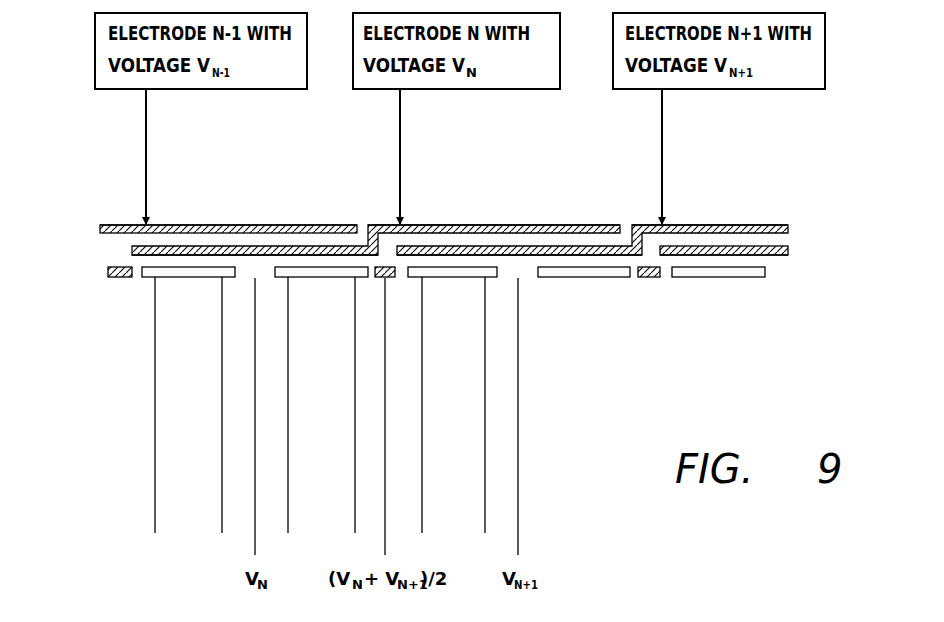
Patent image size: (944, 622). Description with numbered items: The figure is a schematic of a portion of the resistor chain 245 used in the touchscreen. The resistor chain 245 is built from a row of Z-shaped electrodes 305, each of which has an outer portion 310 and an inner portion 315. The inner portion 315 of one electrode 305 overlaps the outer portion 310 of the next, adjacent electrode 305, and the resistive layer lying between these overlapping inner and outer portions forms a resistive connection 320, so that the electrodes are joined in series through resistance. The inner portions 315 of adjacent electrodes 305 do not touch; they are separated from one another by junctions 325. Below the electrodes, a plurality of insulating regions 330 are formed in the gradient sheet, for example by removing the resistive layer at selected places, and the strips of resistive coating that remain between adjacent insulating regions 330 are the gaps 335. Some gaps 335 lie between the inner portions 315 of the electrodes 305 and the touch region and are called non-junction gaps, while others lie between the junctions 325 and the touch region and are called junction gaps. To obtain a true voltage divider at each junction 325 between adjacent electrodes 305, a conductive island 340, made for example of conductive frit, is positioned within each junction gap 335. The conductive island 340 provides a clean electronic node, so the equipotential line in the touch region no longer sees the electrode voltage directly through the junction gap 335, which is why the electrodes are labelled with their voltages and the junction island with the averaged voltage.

The resistor chain 245 is at (100, 208).
The Z-shaped electrode 305 is at (185, 222).
The outer portion 310 is at (258, 225).
The inner portion 315 is at (212, 246).
The resistive connection 320 is at (312, 246).
The junction 325 is at (377, 230).
The insulating region 330 is at (185, 278).
The gap 335 is at (378, 278).
The conductive island 340 is at (118, 278).